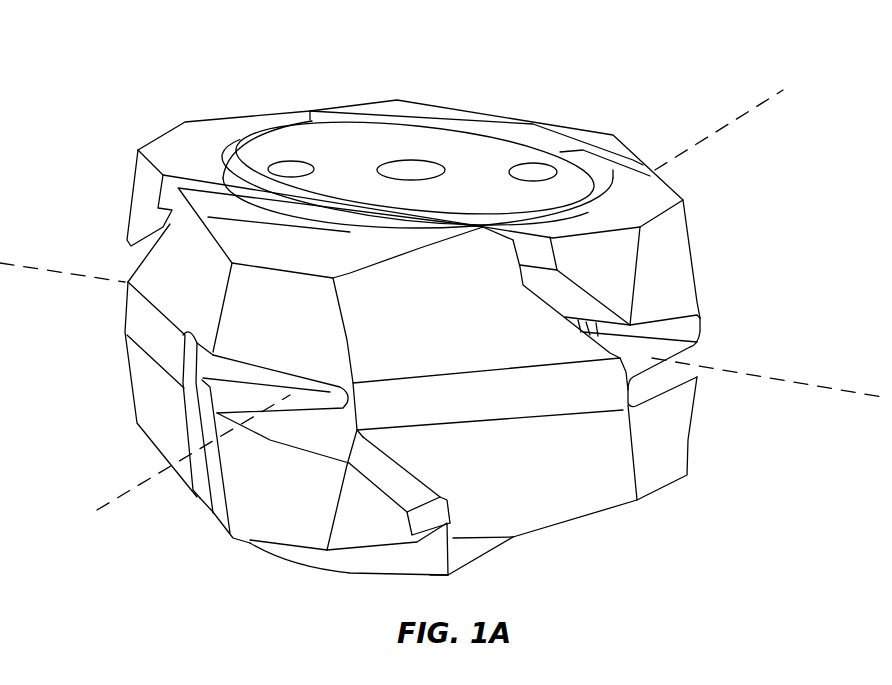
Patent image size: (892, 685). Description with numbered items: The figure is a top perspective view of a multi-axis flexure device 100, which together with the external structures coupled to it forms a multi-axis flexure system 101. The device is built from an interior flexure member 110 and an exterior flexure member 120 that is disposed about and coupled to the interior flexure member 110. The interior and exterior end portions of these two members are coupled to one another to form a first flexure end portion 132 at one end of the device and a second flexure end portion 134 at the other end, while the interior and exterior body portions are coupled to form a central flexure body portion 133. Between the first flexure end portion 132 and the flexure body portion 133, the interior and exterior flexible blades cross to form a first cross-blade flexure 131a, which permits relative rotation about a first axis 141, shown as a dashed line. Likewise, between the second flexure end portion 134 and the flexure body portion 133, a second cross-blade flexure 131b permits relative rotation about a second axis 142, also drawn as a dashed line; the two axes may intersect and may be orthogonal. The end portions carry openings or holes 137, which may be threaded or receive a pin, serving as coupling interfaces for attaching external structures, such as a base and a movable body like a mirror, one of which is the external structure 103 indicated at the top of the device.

The multi-axis flexure device 100 is at (548, 74).
The multi-axis flexure system 101 is at (214, 60).
The external structure 103 is at (394, 61).
The interior flexure member 110 is at (304, 140).
The exterior flexure member 120 is at (152, 112).
The first cross-blade flexure 131a is at (670, 378).
The second cross-blade flexure 131b is at (275, 420).
The first flexure end portion 132 is at (698, 182).
The flexure body portion 133 is at (633, 512).
The second flexure end portion 134 is at (368, 588).
The openings or holes 137 is at (535, 168).
The first axis 141 is at (792, 383).
The second axis 142 is at (117, 500).